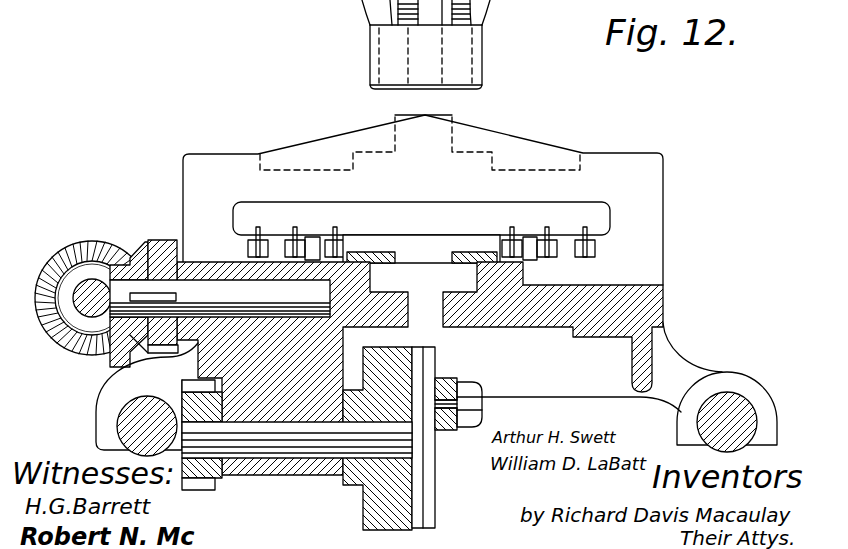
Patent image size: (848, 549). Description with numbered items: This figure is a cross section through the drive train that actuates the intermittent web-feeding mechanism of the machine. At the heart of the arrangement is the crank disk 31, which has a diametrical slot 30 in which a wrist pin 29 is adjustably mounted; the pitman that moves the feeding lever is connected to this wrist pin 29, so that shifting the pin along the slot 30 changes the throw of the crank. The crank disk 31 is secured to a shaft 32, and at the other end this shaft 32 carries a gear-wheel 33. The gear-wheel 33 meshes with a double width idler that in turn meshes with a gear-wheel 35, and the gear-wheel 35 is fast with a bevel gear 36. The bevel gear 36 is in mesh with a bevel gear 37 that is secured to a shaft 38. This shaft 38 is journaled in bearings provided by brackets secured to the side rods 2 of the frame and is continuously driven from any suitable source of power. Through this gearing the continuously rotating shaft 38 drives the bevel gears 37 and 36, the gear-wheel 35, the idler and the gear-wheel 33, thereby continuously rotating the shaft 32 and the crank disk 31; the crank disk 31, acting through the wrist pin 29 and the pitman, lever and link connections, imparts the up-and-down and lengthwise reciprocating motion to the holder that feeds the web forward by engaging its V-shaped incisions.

The side rods 2 is at (128, 420).
The wrist pin 29 is at (445, 437).
The diametrical slot 30 is at (416, 504).
The crank disk 31 is at (365, 439).
The shaft 32 is at (270, 470).
The gear-wheel 33 is at (207, 478).
The gear-wheel 35 is at (161, 240).
The bevel gear 36 is at (140, 250).
The bevel gear 37 is at (73, 247).
The shaft 38 is at (78, 322).